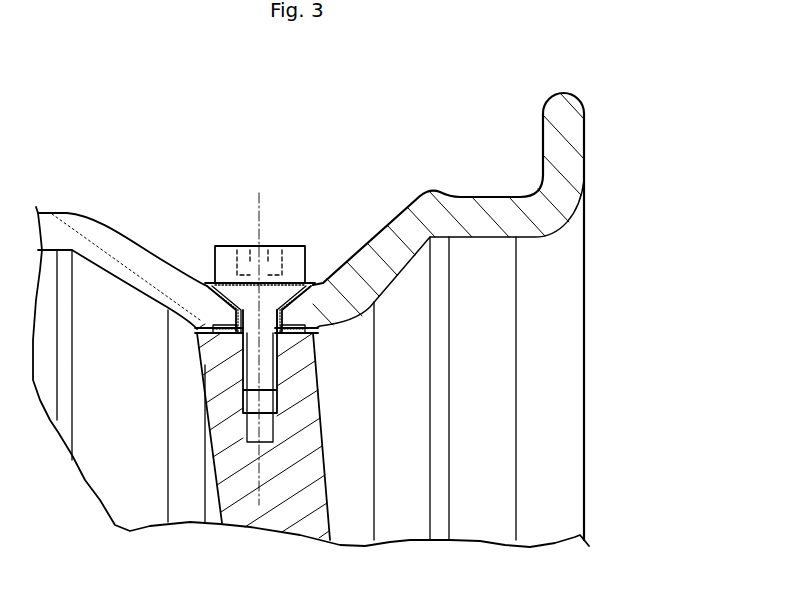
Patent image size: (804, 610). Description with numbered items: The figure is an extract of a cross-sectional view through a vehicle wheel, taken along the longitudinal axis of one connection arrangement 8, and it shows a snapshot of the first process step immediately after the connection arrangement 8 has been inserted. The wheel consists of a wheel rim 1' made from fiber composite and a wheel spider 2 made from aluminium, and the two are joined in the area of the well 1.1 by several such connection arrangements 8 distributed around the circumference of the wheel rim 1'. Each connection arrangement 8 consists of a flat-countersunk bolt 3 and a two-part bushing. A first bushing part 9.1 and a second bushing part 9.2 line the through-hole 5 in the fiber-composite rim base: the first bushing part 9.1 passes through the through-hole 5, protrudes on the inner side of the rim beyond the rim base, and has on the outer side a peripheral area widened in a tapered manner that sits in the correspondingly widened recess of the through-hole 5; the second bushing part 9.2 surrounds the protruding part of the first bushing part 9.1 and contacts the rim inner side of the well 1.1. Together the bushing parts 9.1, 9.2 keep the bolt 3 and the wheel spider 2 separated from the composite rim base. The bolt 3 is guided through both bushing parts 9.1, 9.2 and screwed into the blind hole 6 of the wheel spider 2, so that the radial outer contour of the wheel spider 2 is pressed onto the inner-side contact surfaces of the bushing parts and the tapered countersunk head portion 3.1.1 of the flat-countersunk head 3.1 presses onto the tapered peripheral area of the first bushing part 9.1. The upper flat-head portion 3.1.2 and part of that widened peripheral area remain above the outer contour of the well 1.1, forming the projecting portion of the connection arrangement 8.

The wheel rim 1' is at (498, 316).
The well 1.1 is at (207, 307).
The wheel spider 2 is at (320, 511).
The flat-countersunk bolt 3 is at (482, 293).
The flat-countersunk head 3.1 is at (482, 271).
The countersunk head portion 3.1.1 is at (283, 292).
The flat-head portion 3.1.2 is at (305, 263).
The through-hole 5 is at (287, 314).
The blind hole 6 is at (277, 384).
The connection arrangement 8 is at (477, 324).
The first bushing part 9.1 is at (285, 304).
The second bushing part 9.2 is at (290, 309).